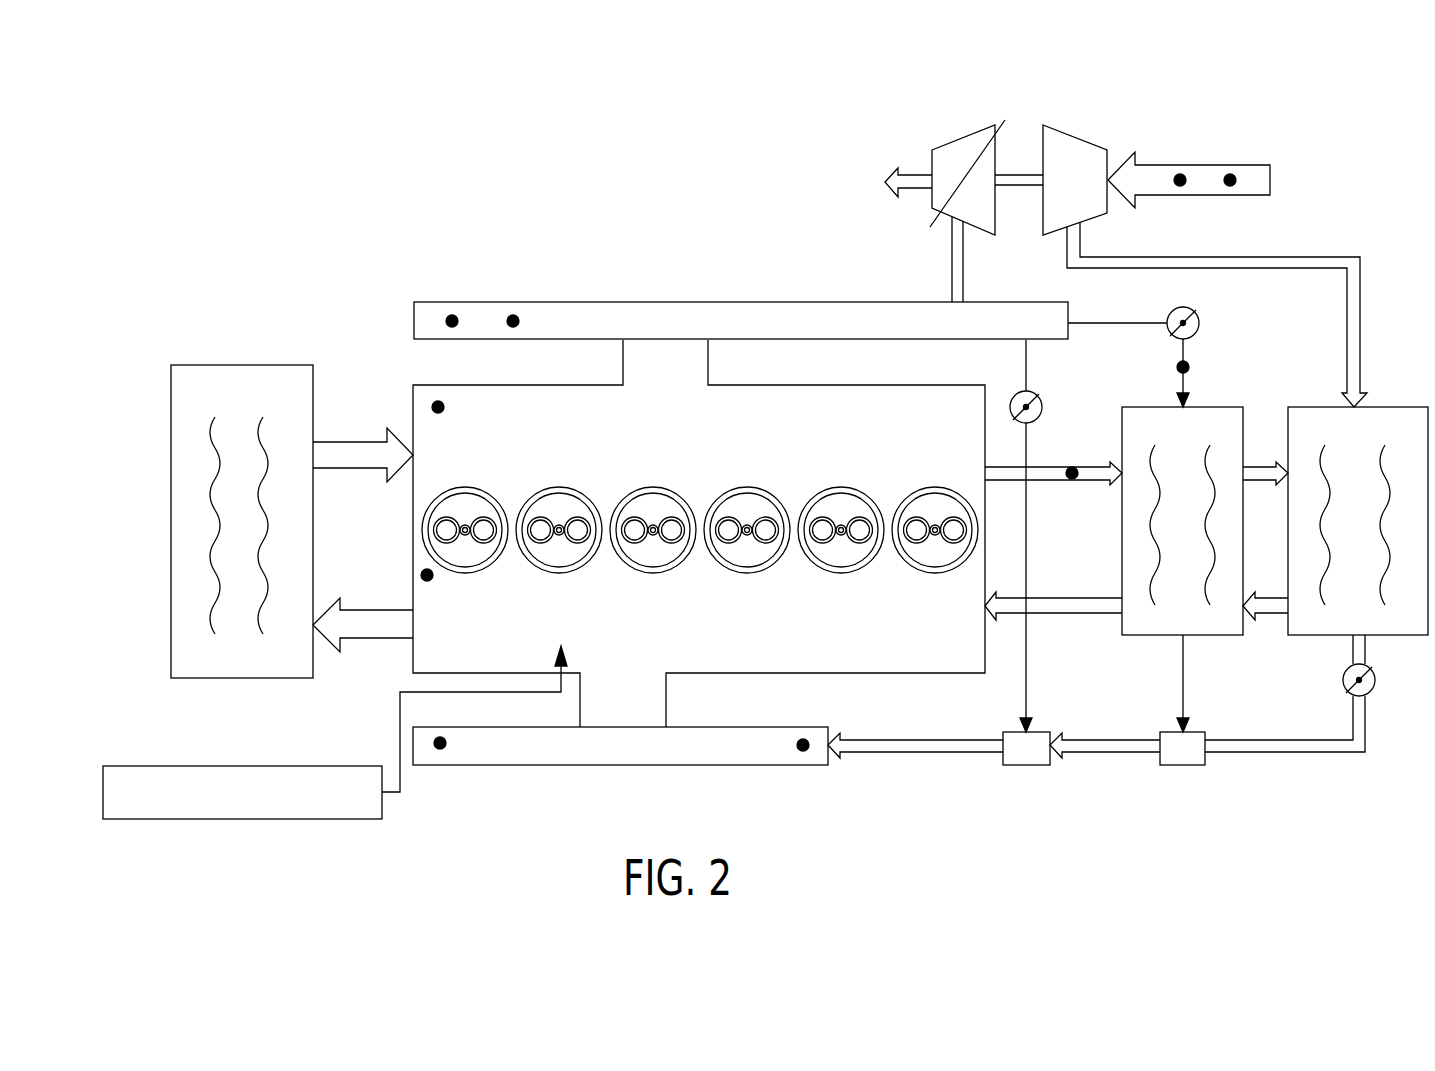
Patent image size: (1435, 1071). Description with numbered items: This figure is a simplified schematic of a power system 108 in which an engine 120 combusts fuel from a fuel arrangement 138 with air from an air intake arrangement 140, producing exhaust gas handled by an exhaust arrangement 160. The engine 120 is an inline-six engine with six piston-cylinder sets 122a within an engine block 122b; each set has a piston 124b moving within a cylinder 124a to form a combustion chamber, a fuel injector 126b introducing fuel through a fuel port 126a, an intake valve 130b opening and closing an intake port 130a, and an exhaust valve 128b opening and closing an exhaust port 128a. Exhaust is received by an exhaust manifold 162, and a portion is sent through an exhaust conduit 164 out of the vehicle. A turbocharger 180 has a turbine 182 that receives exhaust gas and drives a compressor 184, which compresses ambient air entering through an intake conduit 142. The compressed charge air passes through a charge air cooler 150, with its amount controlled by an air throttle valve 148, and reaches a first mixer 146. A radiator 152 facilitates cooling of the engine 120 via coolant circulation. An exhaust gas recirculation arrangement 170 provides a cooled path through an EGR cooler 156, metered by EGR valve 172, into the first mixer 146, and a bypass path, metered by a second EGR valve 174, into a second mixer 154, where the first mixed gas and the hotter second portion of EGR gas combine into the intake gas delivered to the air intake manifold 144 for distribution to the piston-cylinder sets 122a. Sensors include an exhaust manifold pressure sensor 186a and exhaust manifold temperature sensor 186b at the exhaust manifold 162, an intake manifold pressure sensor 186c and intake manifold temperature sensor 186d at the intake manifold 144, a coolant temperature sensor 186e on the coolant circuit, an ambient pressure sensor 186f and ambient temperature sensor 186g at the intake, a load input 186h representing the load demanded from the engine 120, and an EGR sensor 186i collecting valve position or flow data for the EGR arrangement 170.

The power system 108 is at (681, 112).
The engine 120 is at (851, 676).
The piston-cylinder set 122a is at (831, 525).
The engine block 122b is at (822, 604).
The cylinder 124a is at (838, 573).
The piston 124b is at (848, 568).
The fuel port 126a is at (830, 568).
The fuel injector 126b is at (842, 524).
The exhaust port 128a is at (822, 516).
The exhaust valve 128b is at (823, 519).
The intake port 130a is at (860, 543).
The intake valve 130b is at (860, 517).
The fuel arrangement 138 is at (242, 820).
The air intake arrangement 140 is at (1327, 221).
The intake conduit 142 is at (1250, 165).
The air intake manifold 144 is at (614, 766).
The first mixer 146 is at (1183, 766).
The air throttle valve 148 is at (1342, 680).
The charge air cooler 150 is at (1402, 407).
The radiator 152 is at (245, 679).
The second mixer 154 is at (1027, 766).
The EGR cooler 156 is at (1213, 407).
The exhaust arrangement 160 is at (693, 212).
The exhaust manifold 162 is at (835, 340).
The exhaust conduit 164 is at (915, 194).
The exhaust gas recirculation arrangement 170 is at (1010, 386).
The EGR valve 172 is at (1197, 318).
The second EGR valve 174 is at (1036, 420).
The turbocharger 180 is at (955, 117).
The turbine 182 is at (983, 237).
The compressor 184 is at (1080, 140).
The exhaust manifold pressure sensor 186a is at (452, 321).
The exhaust manifold temperature sensor 186b is at (513, 321).
The intake manifold pressure sensor 186c is at (440, 743).
The intake manifold temperature sensor 186d is at (803, 745).
The coolant temperature sensor 186e is at (1072, 473).
The ambient pressure sensor 186f is at (1180, 180).
The ambient temperature sensor 186g is at (1230, 180).
The load input 186h is at (427, 575).
The EGR sensor 186i is at (438, 407).